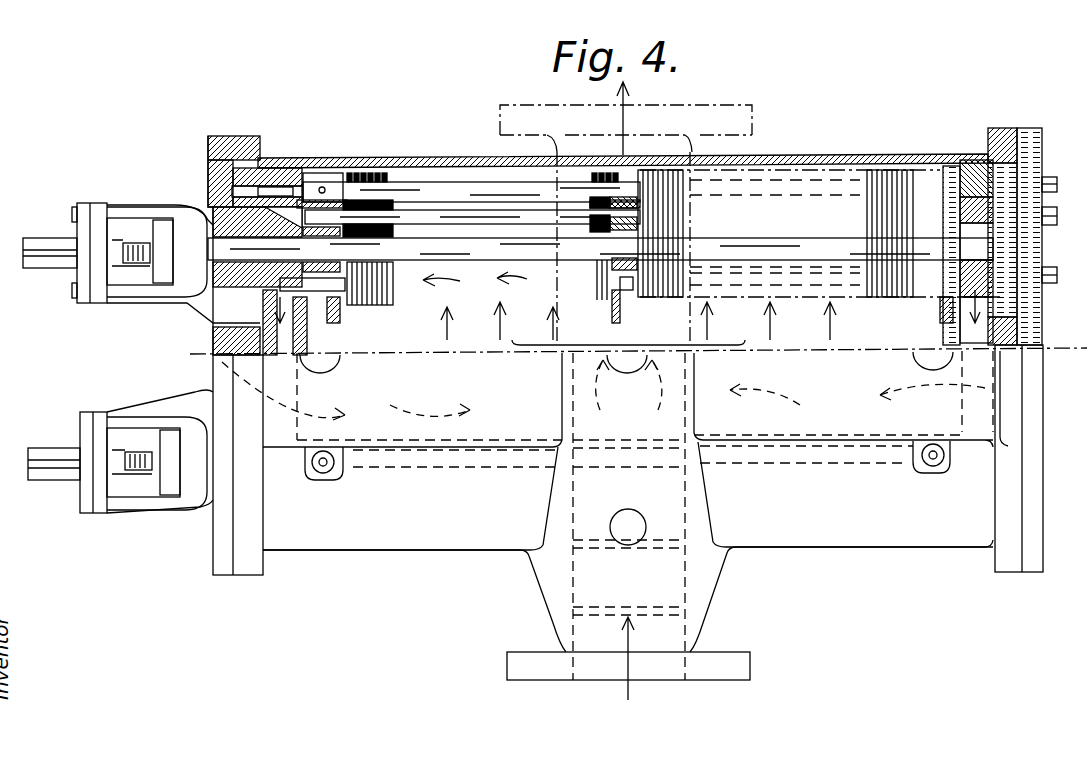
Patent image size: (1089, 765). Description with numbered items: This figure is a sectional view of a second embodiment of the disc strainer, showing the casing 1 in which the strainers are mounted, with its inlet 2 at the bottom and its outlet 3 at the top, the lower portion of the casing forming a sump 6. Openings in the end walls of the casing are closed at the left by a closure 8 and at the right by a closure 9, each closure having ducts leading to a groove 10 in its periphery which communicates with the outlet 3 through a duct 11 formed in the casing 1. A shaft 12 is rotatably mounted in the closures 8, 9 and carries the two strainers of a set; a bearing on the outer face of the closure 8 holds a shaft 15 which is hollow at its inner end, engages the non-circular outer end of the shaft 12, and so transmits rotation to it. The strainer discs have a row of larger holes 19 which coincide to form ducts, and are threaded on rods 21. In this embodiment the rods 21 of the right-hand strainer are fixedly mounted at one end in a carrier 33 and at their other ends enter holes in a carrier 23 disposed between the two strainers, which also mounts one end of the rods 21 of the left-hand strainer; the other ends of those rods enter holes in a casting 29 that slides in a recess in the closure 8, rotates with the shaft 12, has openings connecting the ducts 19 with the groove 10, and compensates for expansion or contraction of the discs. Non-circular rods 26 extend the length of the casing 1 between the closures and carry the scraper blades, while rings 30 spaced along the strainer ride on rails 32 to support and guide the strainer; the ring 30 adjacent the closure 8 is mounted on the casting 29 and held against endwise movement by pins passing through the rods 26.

The casing 1 is at (815, 141).
The inlet 2 is at (638, 663).
The outlet 3 is at (688, 110).
The sump 6 is at (376, 126).
The closure 8 is at (208, 168).
The closure 9 is at (1035, 238).
The groove 10 is at (298, 325).
The duct 11 is at (212, 353).
The shaft 12 is at (450, 247).
The shaft 15 is at (133, 270).
The holes 19 is at (397, 287).
The rods 21 is at (425, 217).
The carrier 23 is at (615, 297).
The rods 26 is at (477, 187).
The casing (casting) 29 is at (293, 185).
The rings 30 is at (313, 297).
The rails 32 is at (323, 187).
The carrier 33 is at (890, 300).